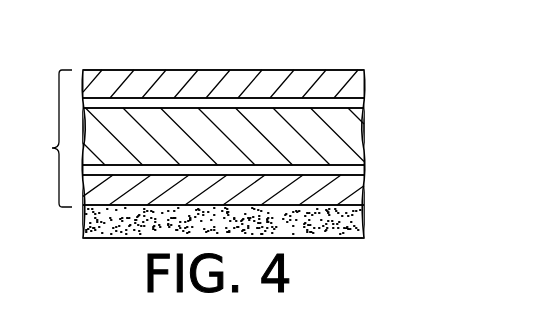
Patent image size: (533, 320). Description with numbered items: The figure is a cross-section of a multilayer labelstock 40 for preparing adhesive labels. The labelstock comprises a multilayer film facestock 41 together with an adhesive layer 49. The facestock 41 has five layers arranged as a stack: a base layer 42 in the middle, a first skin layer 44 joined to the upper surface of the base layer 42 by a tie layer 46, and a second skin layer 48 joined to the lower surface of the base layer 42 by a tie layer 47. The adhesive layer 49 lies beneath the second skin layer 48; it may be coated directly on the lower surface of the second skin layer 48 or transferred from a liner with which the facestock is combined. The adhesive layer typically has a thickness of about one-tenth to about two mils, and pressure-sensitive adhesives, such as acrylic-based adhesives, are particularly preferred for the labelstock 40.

The laminated article / stack 40 is at (108, 68).
The multilayer film facestock 41 is at (52, 148).
The base layer 42 is at (366, 132).
The first skin layer 44 is at (366, 84).
The tie layer 46 is at (366, 102).
The tie layer 47 is at (366, 170).
The second skin layer 48 is at (366, 190).
The adhesive layer 49 is at (366, 218).